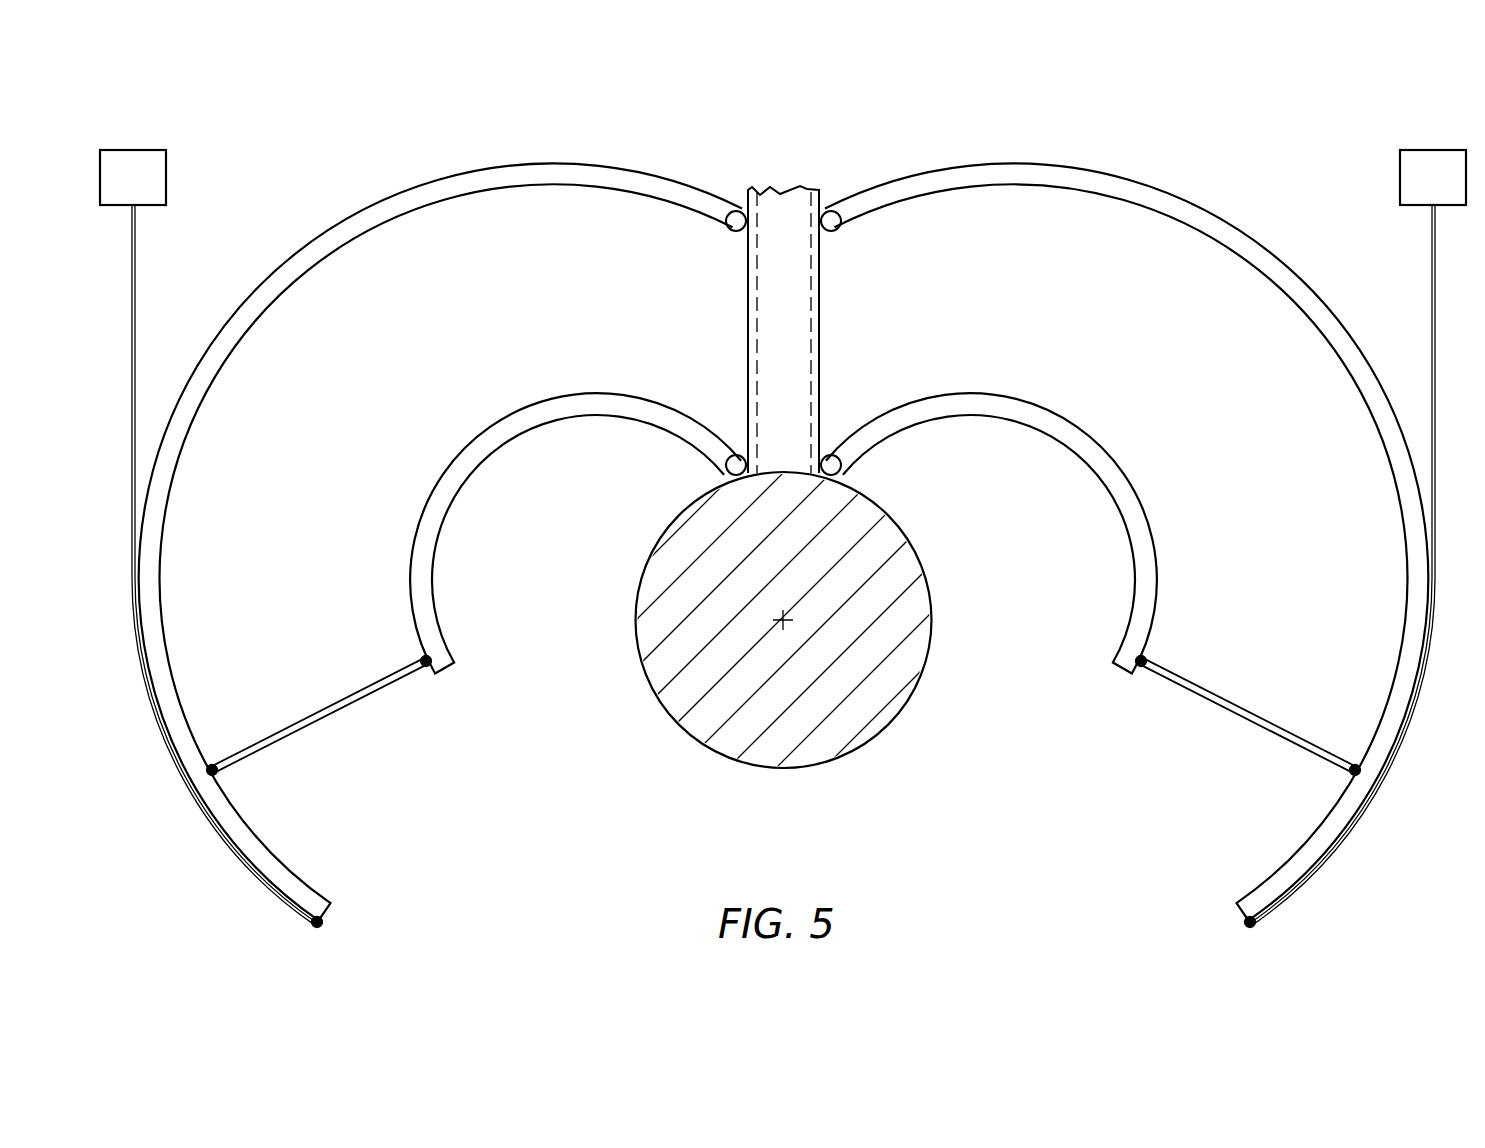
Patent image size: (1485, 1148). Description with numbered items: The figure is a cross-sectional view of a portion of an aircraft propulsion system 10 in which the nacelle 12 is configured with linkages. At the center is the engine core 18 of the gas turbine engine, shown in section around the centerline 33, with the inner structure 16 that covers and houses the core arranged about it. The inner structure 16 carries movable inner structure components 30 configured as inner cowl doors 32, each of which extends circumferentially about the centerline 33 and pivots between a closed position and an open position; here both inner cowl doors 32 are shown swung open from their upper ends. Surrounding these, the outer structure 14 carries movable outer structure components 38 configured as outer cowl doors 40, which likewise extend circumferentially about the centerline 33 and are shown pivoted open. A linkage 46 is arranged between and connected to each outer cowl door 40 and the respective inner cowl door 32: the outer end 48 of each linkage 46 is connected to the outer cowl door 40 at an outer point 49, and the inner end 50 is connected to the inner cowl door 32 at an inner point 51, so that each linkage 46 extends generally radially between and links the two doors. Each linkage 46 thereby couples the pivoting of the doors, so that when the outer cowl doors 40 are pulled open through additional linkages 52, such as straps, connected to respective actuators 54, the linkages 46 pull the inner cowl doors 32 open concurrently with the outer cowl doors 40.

The aircraft propulsion system 10 is at (1096, 137).
The nacelle 12 is at (1187, 166).
The outer structure 14 is at (736, 221).
The inner structure 16 is at (961, 383).
The engine core 18 is at (930, 582).
The inner structure component 30 is at (488, 422).
The inner cowl door 32 is at (1097, 441).
The centerline 33 is at (788, 632).
The outer structure component 38 is at (346, 212).
The outer cowl door 40 is at (1258, 238).
The linkage 46 is at (348, 717).
The outer end 48 is at (218, 773).
The outer point 49 is at (1350, 773).
The inner end 50 is at (428, 672).
The inner point 51 is at (1140, 672).
The additional linkage 52 is at (134, 300).
The actuator 54 is at (118, 193).